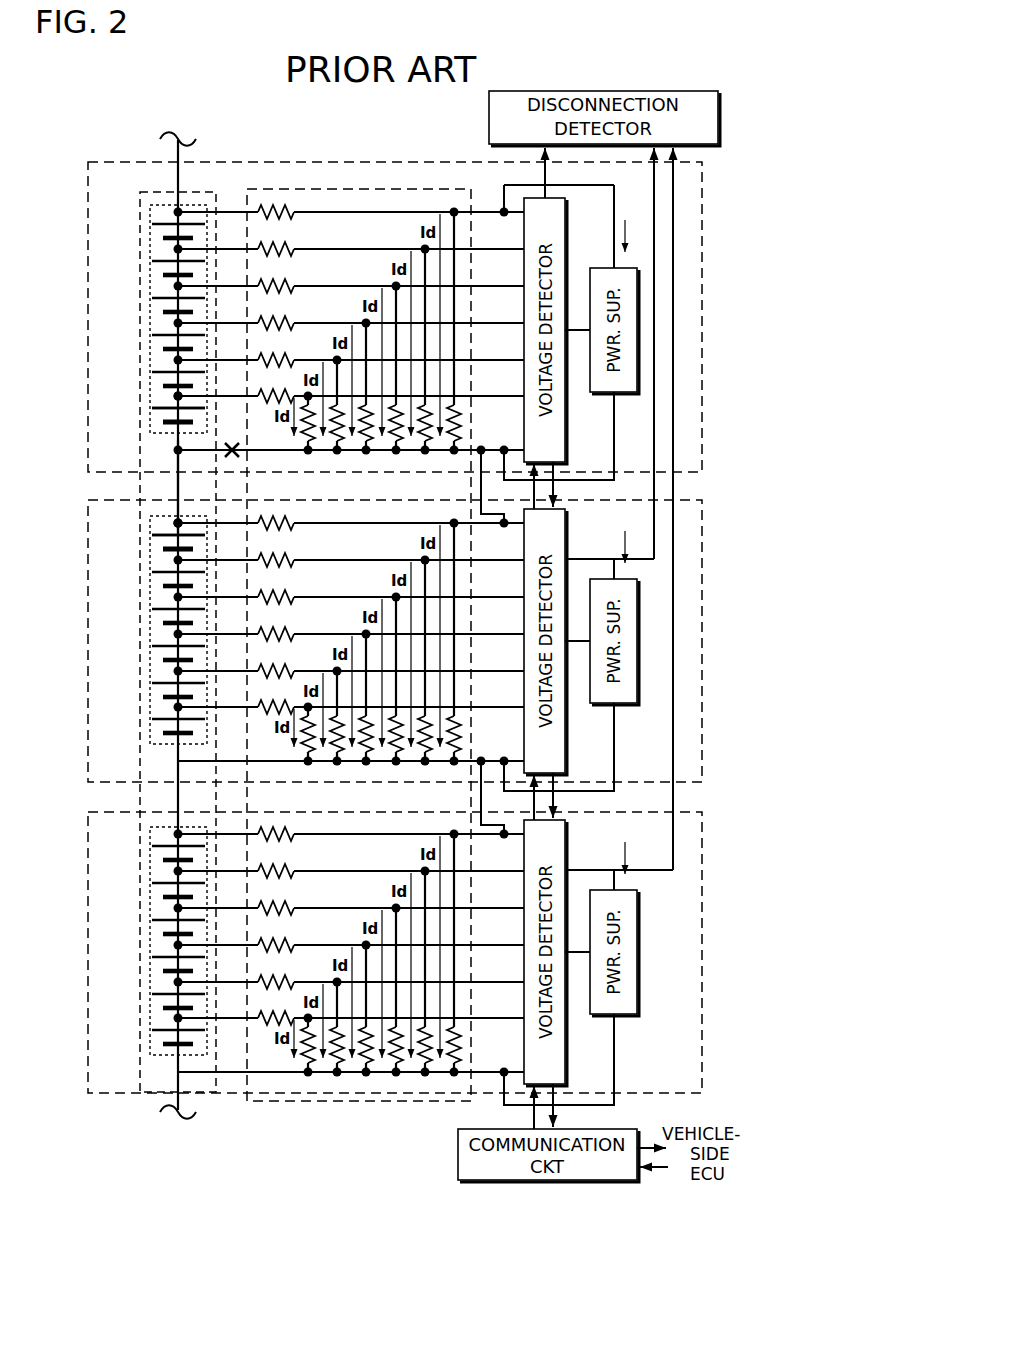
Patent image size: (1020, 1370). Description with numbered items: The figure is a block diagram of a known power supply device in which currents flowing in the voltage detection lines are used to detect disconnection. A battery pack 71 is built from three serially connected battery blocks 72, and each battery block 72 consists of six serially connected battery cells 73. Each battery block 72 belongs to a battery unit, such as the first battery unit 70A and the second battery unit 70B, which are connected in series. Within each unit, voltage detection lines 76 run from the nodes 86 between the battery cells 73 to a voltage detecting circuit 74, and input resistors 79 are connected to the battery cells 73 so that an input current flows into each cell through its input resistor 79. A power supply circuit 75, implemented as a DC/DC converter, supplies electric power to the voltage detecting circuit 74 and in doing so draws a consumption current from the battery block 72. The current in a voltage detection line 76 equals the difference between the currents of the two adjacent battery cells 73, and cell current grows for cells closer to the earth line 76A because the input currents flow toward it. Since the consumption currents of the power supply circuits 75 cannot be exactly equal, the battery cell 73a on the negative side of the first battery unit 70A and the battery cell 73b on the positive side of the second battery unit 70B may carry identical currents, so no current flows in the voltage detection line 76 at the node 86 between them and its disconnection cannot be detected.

The first battery unit 70A is at (702, 350).
The second battery unit 70B is at (702, 630).
The battery pack 71 is at (140, 801).
The battery block 72 is at (148, 872).
The battery cell 73 is at (152, 924).
The battery cell on the negative side of the first battery unit 73a is at (165, 425).
The battery cell on the positive side of the second battery unit 73b is at (160, 533).
The voltage detecting circuit 74 is at (568, 1062).
The power supply circuit 75 is at (622, 1016).
The voltage detection line 76 is at (255, 735).
The earth line 76A is at (277, 455).
The input resistor 79 is at (367, 795).
The node 86 is at (178, 522).